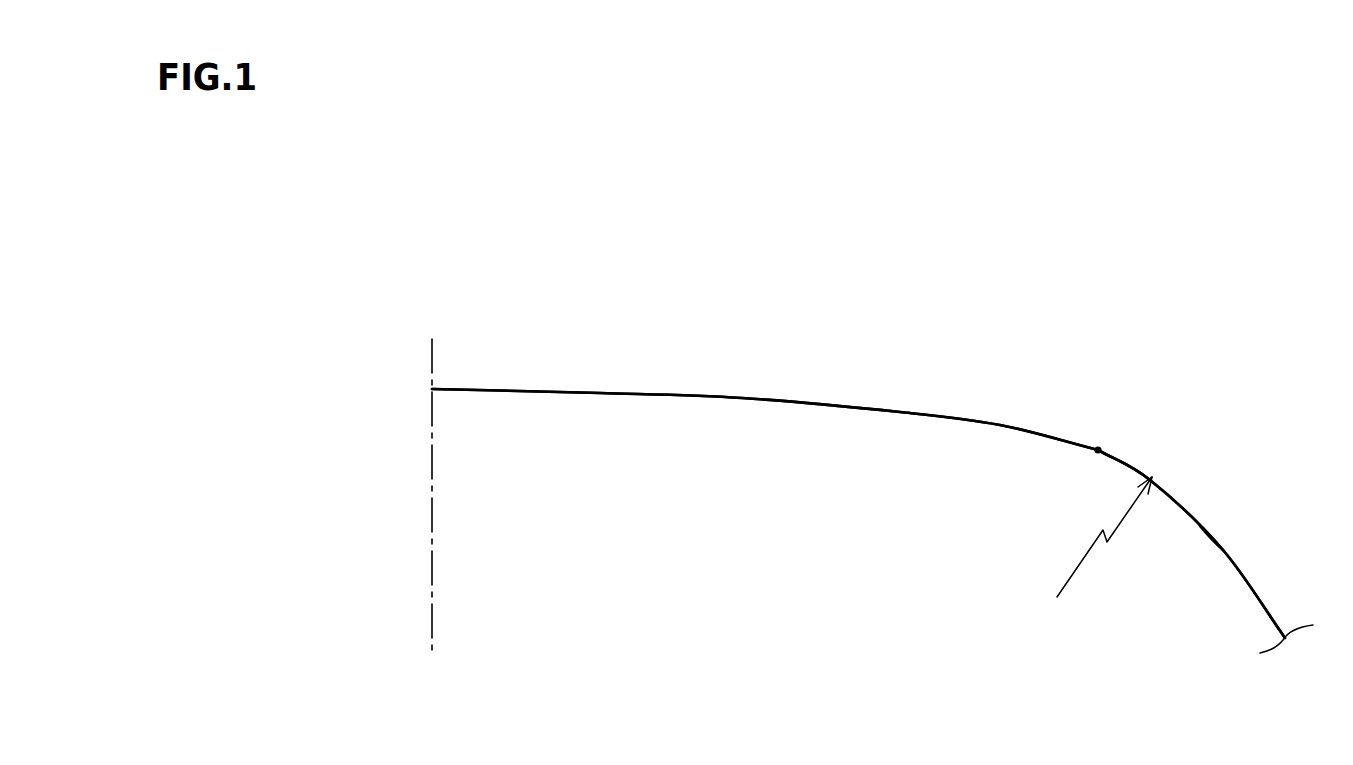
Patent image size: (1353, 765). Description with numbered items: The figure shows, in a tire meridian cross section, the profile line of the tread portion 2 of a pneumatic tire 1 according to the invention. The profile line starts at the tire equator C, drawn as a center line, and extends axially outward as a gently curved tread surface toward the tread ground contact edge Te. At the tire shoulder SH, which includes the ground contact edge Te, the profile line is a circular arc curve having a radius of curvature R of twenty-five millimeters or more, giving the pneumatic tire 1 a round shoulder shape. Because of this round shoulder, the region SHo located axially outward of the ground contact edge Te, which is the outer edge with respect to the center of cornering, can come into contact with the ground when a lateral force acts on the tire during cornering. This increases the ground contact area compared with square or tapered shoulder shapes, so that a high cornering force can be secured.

The pneumatic tire 1 is at (857, 362).
The tread portion 2 is at (742, 397).
The tire equator C is at (432, 480).
The tread ground contact edge Te is at (1089, 441).
The tire shoulder SH is at (1242, 472).
The region located axially outward of the ground contact edge SHo is at (1170, 496).
The radius of curvature R is at (1083, 563).